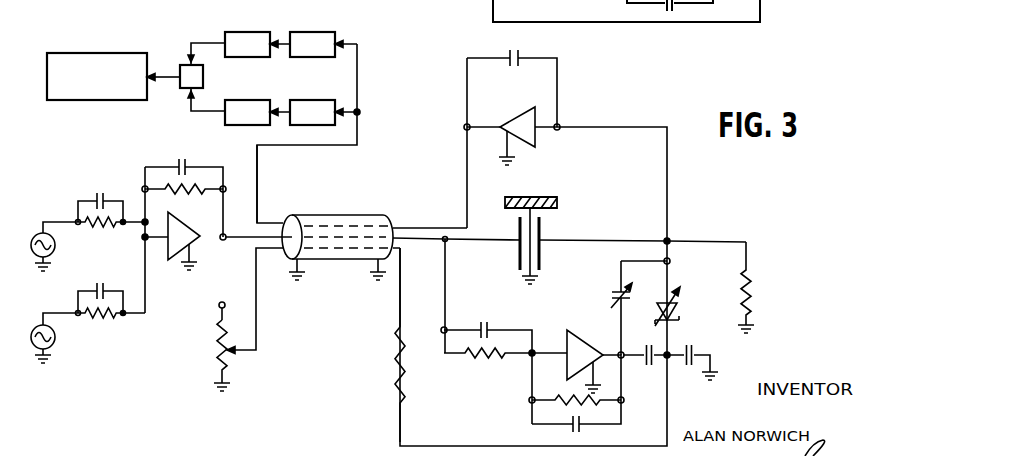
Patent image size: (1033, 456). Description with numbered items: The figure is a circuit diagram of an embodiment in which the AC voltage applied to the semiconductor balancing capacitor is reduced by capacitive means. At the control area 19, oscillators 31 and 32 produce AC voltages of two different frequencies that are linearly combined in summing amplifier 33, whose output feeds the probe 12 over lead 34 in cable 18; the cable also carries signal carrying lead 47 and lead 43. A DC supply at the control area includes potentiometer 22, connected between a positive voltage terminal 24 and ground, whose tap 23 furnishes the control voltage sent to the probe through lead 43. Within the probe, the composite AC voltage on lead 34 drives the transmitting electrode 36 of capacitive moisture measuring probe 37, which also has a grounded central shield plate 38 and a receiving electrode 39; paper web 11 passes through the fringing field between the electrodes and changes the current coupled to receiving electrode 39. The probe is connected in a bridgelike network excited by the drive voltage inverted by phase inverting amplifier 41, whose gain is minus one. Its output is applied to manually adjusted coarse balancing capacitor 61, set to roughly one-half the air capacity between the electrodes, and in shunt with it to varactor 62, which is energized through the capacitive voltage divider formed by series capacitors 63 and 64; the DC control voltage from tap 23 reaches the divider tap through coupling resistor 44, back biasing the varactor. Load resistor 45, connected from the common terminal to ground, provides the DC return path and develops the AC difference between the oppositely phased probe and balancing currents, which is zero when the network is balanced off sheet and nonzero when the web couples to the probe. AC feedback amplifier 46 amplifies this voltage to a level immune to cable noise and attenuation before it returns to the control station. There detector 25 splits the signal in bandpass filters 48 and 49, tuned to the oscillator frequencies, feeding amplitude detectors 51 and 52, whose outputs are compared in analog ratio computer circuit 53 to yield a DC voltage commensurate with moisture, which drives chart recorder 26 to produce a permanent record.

The web 11 is at (546, 197).
The probe 12 is at (456, 175).
The cable 18 is at (354, 218).
The control area 19 is at (179, 136).
The potentiometer 22 is at (217, 358).
The tap 23 is at (247, 352).
The terminal 24 is at (219, 304).
The detector 25 is at (213, 24).
The chart recorder 26 is at (114, 52).
The oscillator 31 is at (56, 251).
The oscillator 32 is at (54, 344).
The summing amplifier 33 is at (176, 263).
The lead 34 is at (247, 235).
The transmitting electrode 36 is at (517, 232).
The capacitive moisture measuring probe 37 is at (553, 231).
The shield plate 38 is at (542, 280).
The receiving electrode 39 is at (541, 256).
The phase inverting amplifier 41 is at (549, 326).
The lead 43 is at (400, 318).
The coupling resistor 44 is at (397, 366).
The load resistor 45 is at (766, 287).
The AC feedback amplifier 46 is at (570, 91).
The signal carrying lead 47 is at (258, 192).
The bandpass filter 48 is at (322, 100).
The bandpass filter 49 is at (315, 30).
The amplitude detector 51 is at (253, 30).
The amplitude detector 52 is at (268, 98).
The analog ratio computer circuit 53 is at (185, 64).
The coarse balancing capacitor 61 is at (610, 302).
The varactor 62 is at (680, 312).
The capacitor 63 is at (652, 368).
The capacitor 64 is at (692, 368).